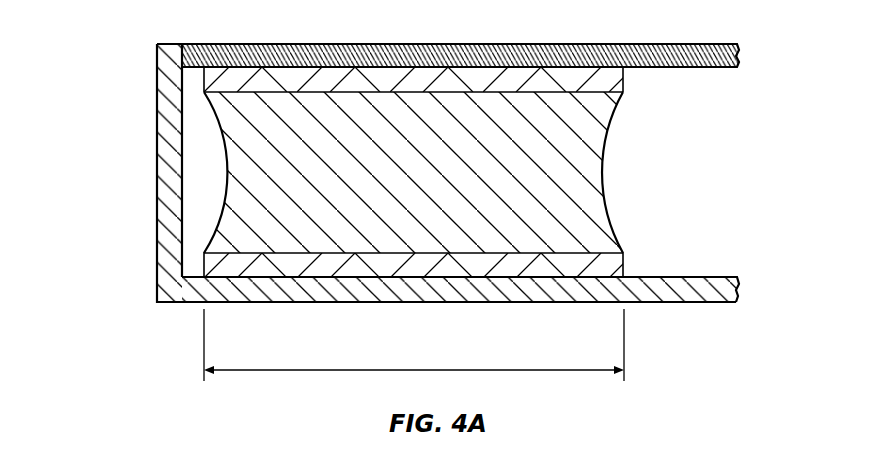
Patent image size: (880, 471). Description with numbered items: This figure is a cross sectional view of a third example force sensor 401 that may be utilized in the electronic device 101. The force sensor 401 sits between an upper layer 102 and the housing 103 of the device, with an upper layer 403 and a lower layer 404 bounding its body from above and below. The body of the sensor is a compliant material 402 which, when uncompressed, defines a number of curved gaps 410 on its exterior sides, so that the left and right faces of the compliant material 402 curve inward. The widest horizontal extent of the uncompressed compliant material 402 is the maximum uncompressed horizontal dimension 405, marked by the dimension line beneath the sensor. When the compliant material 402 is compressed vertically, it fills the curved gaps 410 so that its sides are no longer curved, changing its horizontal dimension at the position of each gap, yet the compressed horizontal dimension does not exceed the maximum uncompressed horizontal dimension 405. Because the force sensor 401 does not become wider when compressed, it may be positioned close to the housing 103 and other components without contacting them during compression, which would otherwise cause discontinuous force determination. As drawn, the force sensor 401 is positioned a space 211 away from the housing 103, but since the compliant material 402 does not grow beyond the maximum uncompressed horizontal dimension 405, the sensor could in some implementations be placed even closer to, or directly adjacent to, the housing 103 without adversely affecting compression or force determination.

The electronic device 101 is at (131, 135).
The top plate 102 is at (704, 44).
The housing 103 is at (720, 302).
The space 211 is at (194, 82).
The force sensor 401 is at (427, 172).
The compliant material 402 is at (612, 230).
The upper adhesive layer 403 is at (623, 80).
The lower adhesive layer 404 is at (624, 269).
The maximum uncompressed horizontal dimension 405 is at (418, 370).
The curved gaps 410 is at (221, 173).